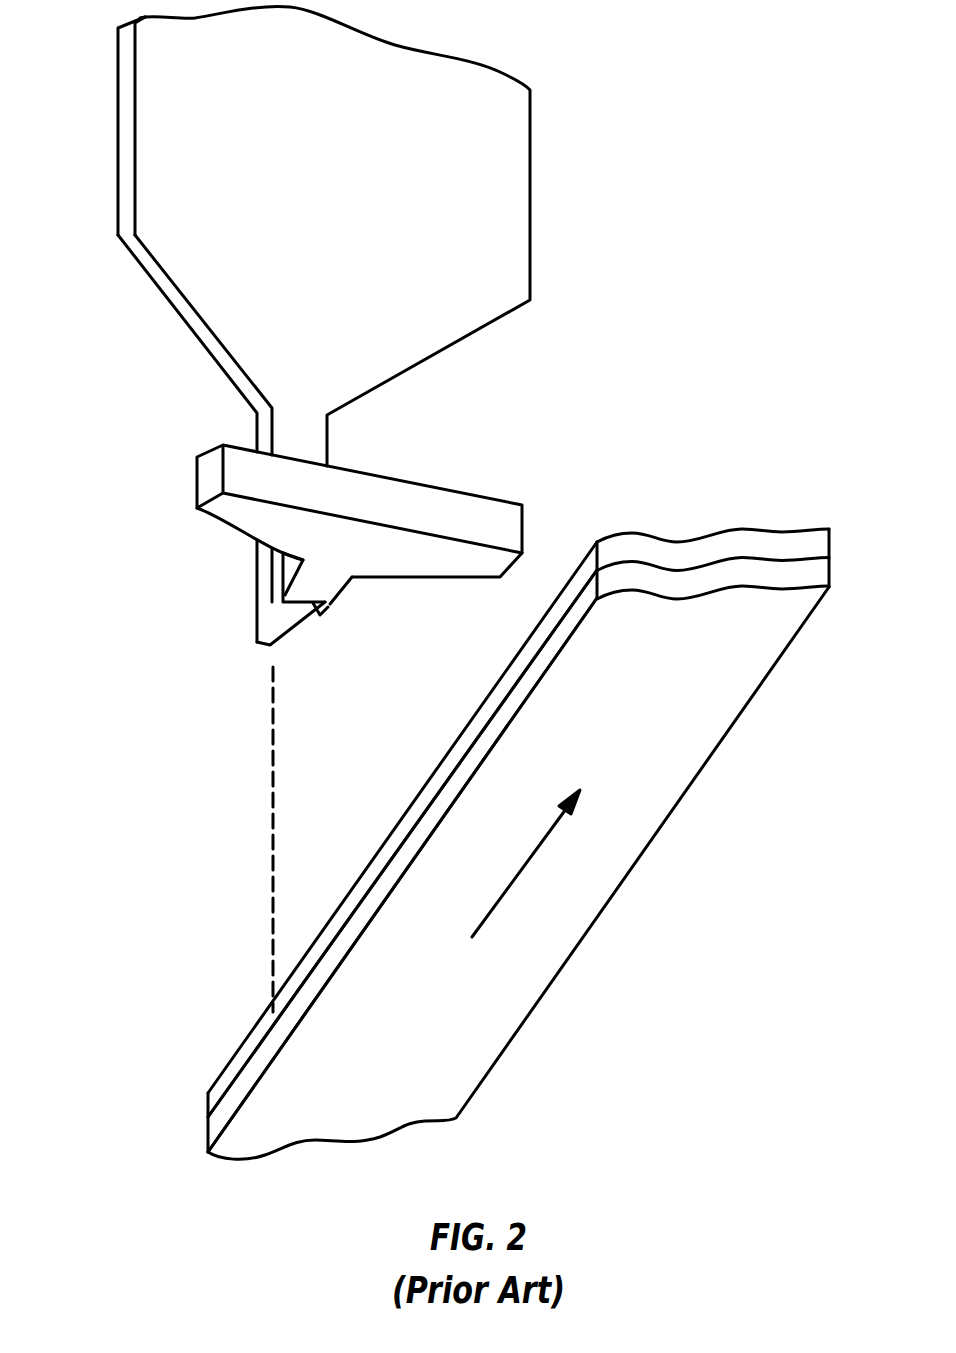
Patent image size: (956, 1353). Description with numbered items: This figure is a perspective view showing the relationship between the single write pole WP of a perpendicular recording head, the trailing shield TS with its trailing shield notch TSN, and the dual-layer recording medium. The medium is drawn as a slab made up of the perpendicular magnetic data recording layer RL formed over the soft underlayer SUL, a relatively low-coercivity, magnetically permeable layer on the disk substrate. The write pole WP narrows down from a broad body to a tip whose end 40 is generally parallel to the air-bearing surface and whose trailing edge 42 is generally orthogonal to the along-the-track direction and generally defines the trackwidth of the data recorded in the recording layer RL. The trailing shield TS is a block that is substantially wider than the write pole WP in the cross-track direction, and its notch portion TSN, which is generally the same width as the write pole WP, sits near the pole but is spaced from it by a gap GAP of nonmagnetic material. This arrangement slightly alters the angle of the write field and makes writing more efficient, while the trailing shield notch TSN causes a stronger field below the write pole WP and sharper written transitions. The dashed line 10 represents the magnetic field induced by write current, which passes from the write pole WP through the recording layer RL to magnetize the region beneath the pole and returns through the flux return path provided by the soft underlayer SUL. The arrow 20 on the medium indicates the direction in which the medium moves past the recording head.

The write pole WP is at (375, 278).
The trailing shield TS is at (347, 492).
The trailing edge 42 is at (282, 590).
The trailing shield notch TSN is at (335, 581).
The gap GAP is at (312, 603).
The end 40 is at (283, 628).
The magnetic field 10 is at (272, 810).
The arrow 20 is at (530, 865).
The recording layer RL is at (263, 1030).
The soft underlayer SUL is at (245, 1087).